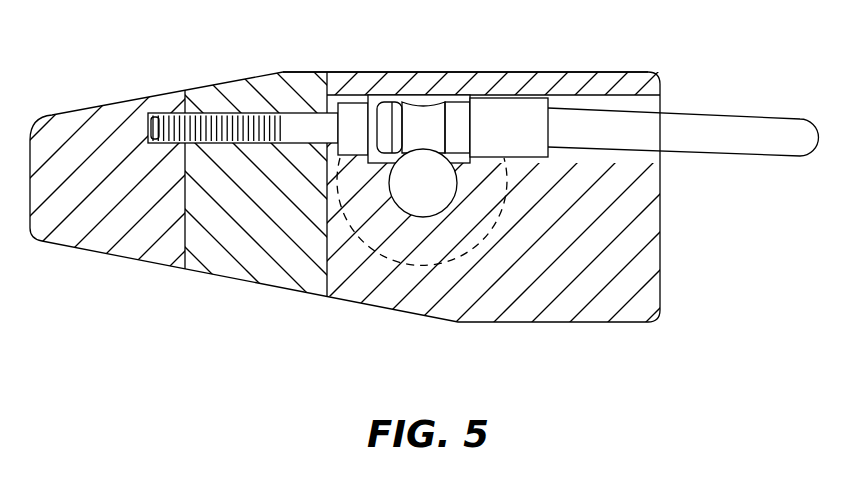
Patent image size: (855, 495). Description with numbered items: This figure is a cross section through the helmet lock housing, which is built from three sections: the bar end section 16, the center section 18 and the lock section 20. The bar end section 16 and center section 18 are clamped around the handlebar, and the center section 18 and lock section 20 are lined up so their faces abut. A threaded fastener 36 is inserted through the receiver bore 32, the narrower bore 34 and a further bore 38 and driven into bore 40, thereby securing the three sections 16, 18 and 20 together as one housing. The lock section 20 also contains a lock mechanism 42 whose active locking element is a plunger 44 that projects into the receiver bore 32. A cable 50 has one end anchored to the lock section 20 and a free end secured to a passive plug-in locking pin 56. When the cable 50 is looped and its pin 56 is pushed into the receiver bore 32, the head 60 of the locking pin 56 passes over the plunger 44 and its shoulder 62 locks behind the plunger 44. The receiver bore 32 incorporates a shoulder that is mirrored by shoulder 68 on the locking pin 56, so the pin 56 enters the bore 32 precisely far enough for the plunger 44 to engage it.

The bar end section 16 is at (113, 223).
The center section 18 is at (232, 240).
The lock section 20 is at (585, 288).
The receiver bore 32 is at (570, 72).
The narrower bore 34 is at (352, 118).
The threaded fastener 36 is at (346, 118).
The bore 38 is at (260, 113).
The bore 40 is at (174, 113).
The lock mechanism 42 is at (436, 252).
The plunger 44 is at (436, 194).
The cable 50 is at (790, 138).
The locking pin 56 is at (510, 138).
The head 60 is at (352, 160).
The shoulder 62 is at (420, 117).
The shoulder 68 is at (472, 108).